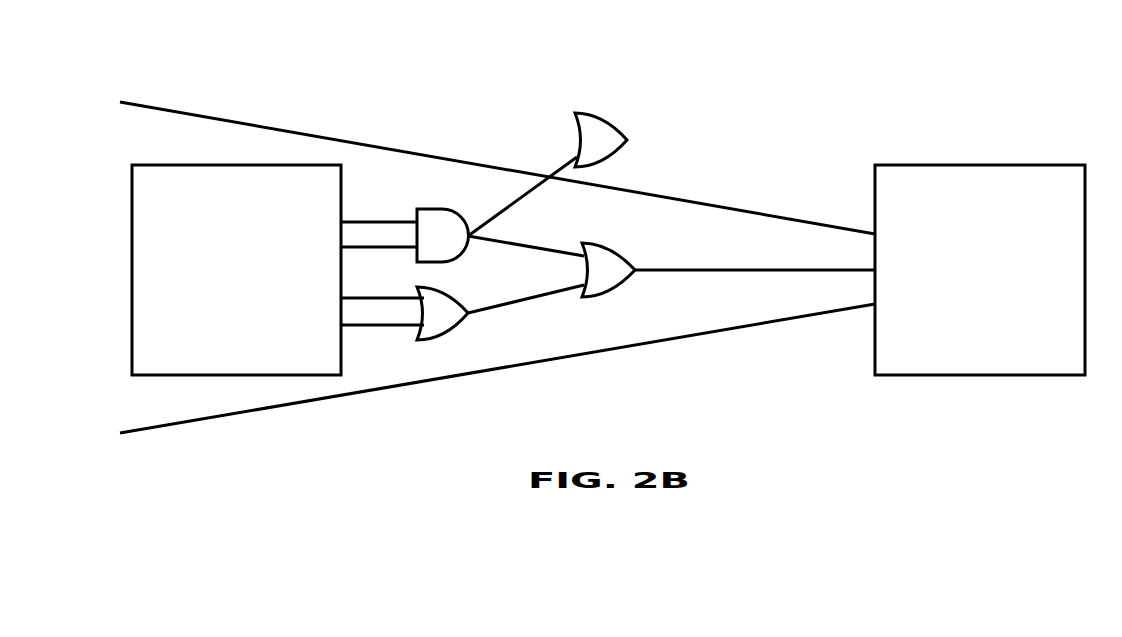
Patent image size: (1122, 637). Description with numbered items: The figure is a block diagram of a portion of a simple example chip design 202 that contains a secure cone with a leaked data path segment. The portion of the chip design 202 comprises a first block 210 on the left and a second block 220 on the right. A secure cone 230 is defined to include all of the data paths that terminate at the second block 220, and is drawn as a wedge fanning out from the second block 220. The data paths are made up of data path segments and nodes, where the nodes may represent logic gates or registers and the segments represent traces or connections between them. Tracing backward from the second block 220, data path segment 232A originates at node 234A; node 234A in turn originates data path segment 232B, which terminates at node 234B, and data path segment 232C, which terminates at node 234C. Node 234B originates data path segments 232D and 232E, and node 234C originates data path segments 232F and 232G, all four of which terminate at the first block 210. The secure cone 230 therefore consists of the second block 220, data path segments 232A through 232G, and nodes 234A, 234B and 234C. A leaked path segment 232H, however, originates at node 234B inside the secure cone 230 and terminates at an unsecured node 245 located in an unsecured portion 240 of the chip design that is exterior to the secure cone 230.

The chip design 202 is at (367, 87).
The unsecured portion 240 is at (778, 102).
The secure cone 230 is at (497, 168).
The first block 210 is at (250, 294).
The second block 220 is at (995, 294).
The data path segment 232A is at (755, 312).
The data path segment 232B is at (542, 229).
The data path segment 232C is at (543, 335).
The data path segment 232D is at (347, 201).
The data path segment 232E is at (411, 270).
The data path segment 232F is at (362, 278).
The data path segment 232G is at (402, 369).
The leaked path segment 232H is at (514, 171).
The node 234A is at (641, 315).
The node 234B is at (405, 187).
The node 234C is at (477, 346).
The unsecured node 245 is at (630, 130).